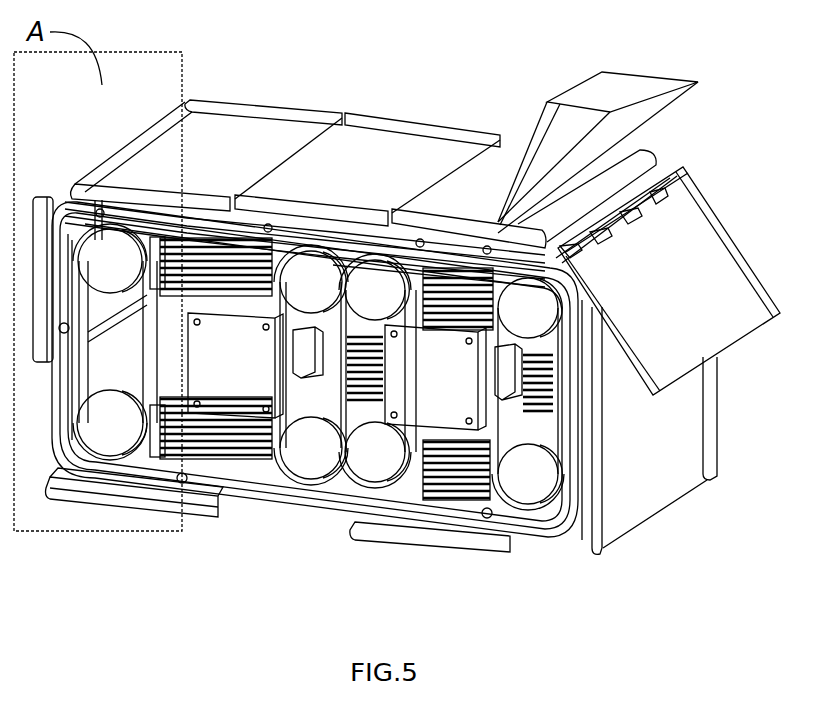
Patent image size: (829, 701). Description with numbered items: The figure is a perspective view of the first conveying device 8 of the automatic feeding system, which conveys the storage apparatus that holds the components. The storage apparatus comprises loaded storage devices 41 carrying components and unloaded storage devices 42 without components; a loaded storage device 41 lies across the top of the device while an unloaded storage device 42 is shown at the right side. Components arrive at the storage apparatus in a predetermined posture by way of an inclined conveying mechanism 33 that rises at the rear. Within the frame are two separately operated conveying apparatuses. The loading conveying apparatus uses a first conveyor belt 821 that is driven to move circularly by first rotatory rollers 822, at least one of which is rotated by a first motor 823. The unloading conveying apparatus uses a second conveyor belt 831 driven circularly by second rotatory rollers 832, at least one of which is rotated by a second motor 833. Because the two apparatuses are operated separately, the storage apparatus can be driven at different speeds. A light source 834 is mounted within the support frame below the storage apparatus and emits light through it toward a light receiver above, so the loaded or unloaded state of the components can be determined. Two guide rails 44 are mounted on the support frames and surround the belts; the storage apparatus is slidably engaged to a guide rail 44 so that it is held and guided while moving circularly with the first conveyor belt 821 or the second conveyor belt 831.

The first conveying device 8 is at (252, 72).
The loaded storage device 41 is at (358, 155).
The inclined conveying mechanism 33 is at (540, 137).
The unloaded storage device 42 is at (697, 280).
The light source 834 is at (335, 245).
The second rotatory rollers 832 is at (107, 433).
The second motor 833 is at (223, 363).
The second conveyor belt 831 is at (275, 445).
The first conveyor belt 821 is at (405, 488).
The first motor 823 is at (410, 387).
The first rotatory rollers 822 is at (520, 478).
The guide rail 44 is at (310, 507).